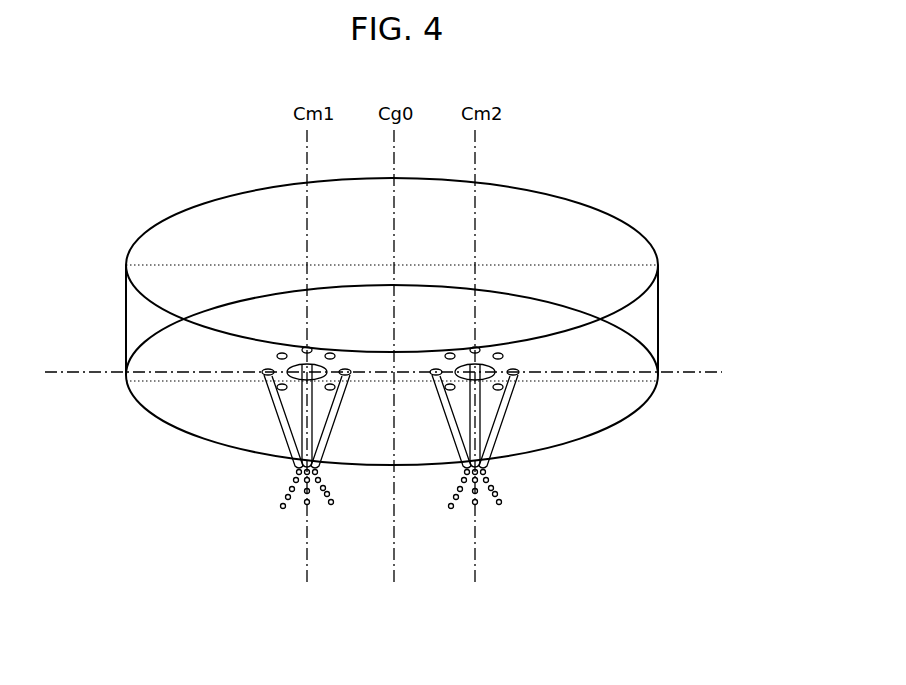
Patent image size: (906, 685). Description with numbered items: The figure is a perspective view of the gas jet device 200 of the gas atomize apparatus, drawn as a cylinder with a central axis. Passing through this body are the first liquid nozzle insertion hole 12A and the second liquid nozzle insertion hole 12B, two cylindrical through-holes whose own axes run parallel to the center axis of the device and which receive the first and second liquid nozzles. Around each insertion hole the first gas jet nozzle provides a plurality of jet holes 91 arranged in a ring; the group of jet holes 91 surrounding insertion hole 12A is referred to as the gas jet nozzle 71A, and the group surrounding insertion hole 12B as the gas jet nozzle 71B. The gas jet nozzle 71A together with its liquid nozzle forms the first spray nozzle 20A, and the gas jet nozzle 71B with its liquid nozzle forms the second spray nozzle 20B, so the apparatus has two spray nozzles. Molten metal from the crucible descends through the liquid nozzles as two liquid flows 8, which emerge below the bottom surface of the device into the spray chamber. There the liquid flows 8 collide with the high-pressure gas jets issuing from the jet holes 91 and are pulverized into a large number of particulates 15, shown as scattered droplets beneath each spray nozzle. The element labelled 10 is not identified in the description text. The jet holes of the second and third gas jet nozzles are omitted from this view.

The gas jet device 200 is at (657, 310).
The first liquid nozzle insertion hole 12A is at (298, 355).
The second liquid nozzle insertion hole 12B is at (486, 358).
The gas jet nozzle 71A is at (267, 370).
The gas jet nozzle 71B is at (500, 352).
The jet holes 91 is at (514, 370).
The first spray nozzle 20A is at (202, 326).
The second spray nozzle 20B is at (587, 361).
The nozzle holder arm 10 is at (307, 421).
The liquid flow 8 is at (497, 447).
The particulates 15 is at (307, 489).